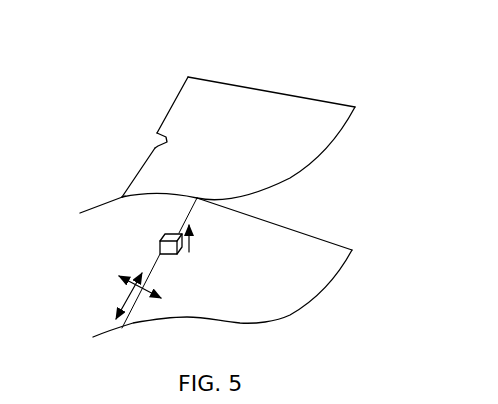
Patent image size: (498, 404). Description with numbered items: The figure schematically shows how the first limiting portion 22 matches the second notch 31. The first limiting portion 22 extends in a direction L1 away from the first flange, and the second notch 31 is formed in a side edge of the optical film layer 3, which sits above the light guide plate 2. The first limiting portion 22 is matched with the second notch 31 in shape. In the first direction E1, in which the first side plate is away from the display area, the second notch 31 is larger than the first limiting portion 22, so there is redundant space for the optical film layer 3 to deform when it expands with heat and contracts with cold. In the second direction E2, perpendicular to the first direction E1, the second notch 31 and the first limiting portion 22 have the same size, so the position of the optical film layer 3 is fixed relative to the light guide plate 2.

The light guide plate 2 is at (303, 257).
The optical film layer 3 is at (295, 125).
The first limiting portion 22 is at (160, 241).
The second notch 31 is at (166, 141).
The direction L1 is at (203, 240).
The first direction E1 is at (153, 293).
The second direction E2 is at (120, 311).